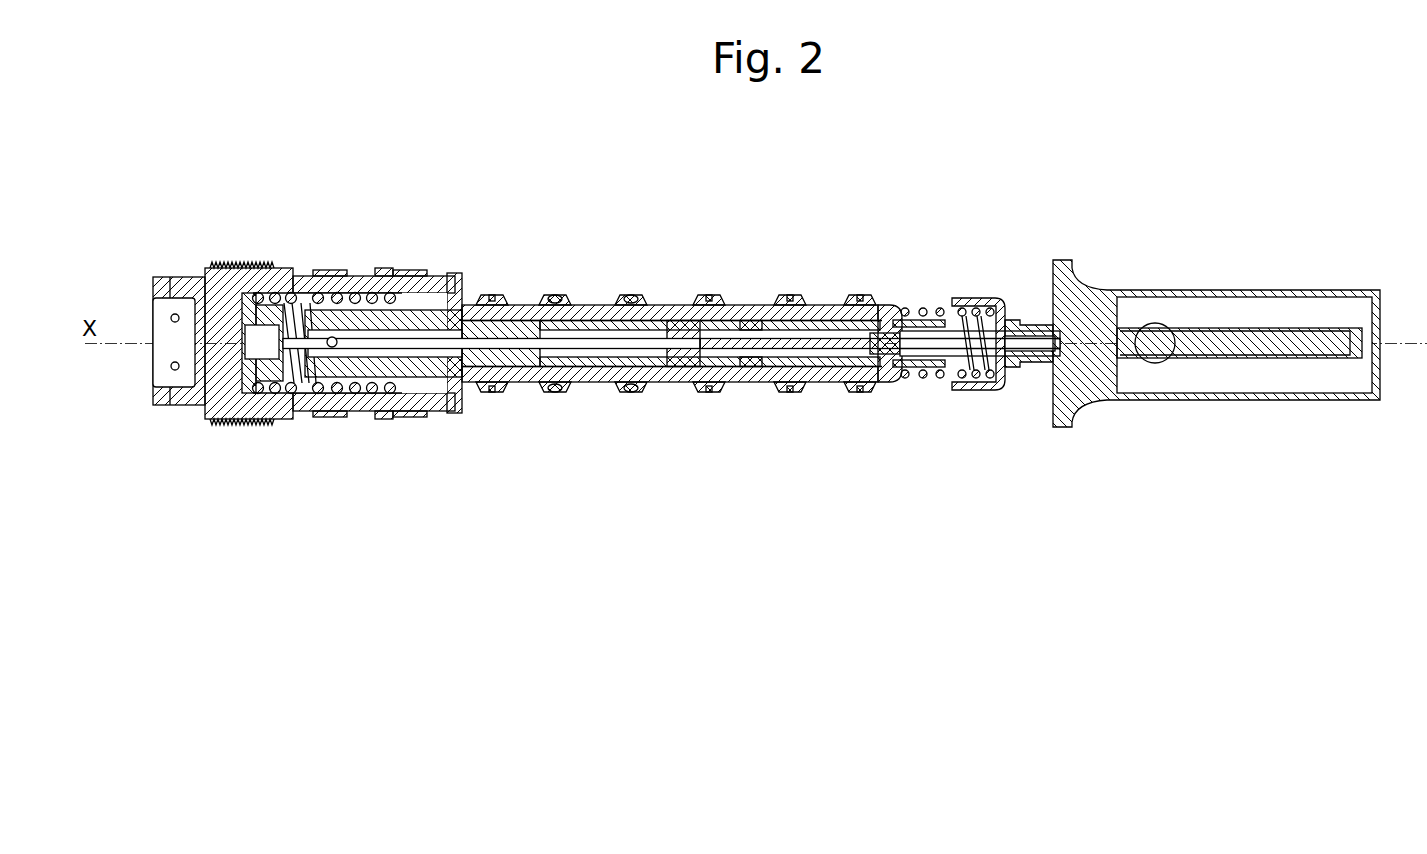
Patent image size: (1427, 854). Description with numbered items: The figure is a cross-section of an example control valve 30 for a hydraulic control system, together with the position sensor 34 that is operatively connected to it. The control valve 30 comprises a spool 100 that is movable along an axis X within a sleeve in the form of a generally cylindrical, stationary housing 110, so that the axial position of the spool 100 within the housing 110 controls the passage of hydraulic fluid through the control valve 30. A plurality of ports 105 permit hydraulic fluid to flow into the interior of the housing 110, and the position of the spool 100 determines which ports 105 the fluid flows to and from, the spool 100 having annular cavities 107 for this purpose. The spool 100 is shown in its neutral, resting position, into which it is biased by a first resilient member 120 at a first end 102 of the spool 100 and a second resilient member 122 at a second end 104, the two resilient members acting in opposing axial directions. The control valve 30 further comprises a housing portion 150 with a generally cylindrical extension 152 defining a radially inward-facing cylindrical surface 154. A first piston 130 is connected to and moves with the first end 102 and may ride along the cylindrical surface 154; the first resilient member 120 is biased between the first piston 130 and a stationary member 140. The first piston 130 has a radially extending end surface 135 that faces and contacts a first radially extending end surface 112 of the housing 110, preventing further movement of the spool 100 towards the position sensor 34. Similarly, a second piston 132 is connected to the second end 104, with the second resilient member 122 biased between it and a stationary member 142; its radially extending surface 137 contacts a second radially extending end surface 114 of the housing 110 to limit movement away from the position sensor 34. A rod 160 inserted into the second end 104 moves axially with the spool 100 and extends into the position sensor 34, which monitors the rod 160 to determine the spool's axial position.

The control valve 30 is at (388, 138).
The position sensor 34 is at (1246, 290).
The spool 100 is at (738, 320).
The first end 102 is at (418, 355).
The second end 104 is at (880, 360).
The ports 105 is at (830, 310).
The annular cavities 107 is at (614, 320).
The housing 110 is at (650, 315).
The first radially extending end surface 112 is at (480, 290).
The second radially extending end surface 114 is at (897, 380).
The first resilient member 120 is at (300, 300).
The second resilient member 122 is at (937, 312).
The first piston 130 is at (415, 300).
The second piston 132 is at (912, 322).
The radially extending end surface 135 is at (455, 392).
The radially extending surface 137 is at (898, 313).
The stationary member 140 is at (248, 393).
The stationary member 142 is at (995, 325).
The housing portion 150 is at (209, 300).
The cylindrical extension 152 is at (380, 290).
The cylindrical surface 154 is at (300, 390).
The rod 160 is at (1030, 347).